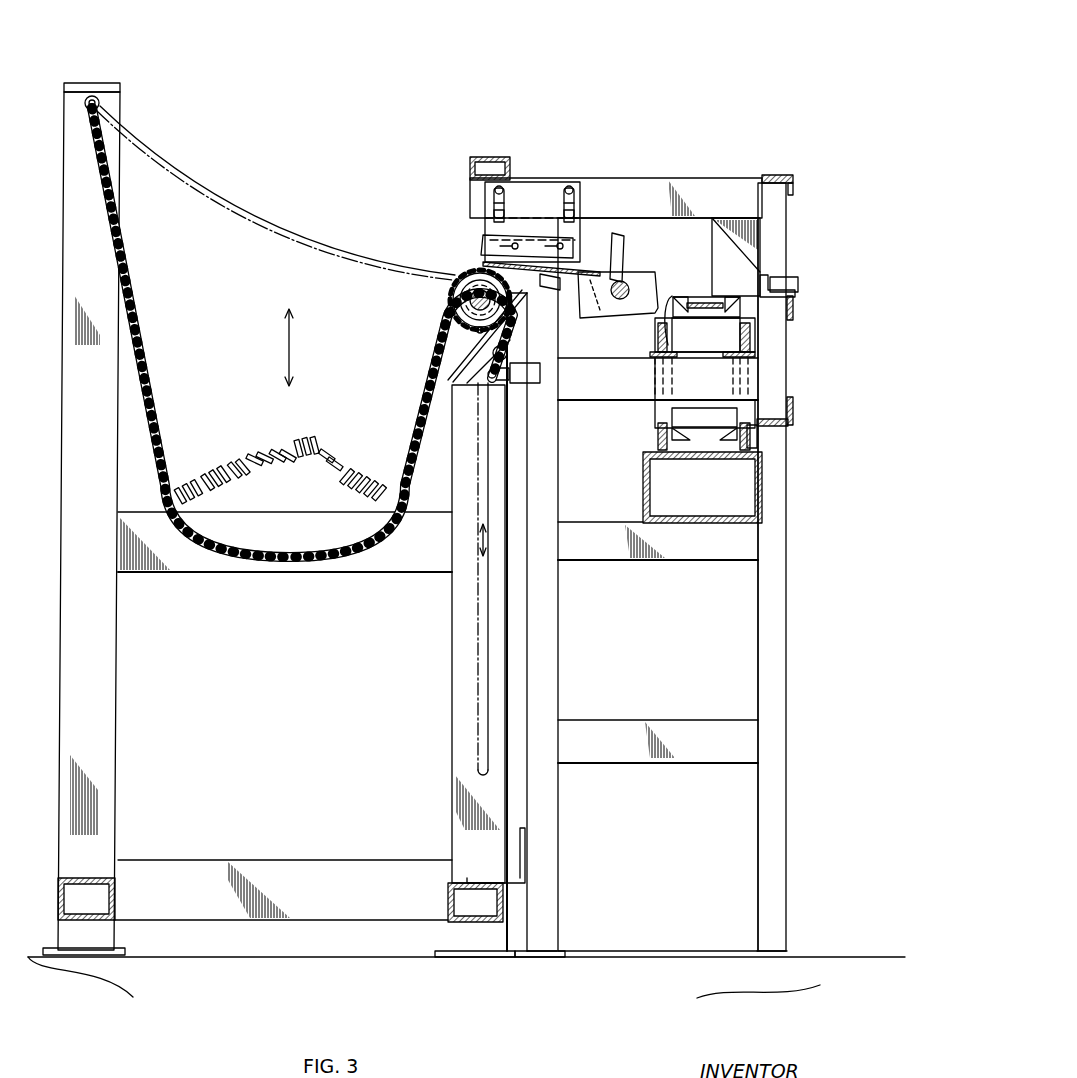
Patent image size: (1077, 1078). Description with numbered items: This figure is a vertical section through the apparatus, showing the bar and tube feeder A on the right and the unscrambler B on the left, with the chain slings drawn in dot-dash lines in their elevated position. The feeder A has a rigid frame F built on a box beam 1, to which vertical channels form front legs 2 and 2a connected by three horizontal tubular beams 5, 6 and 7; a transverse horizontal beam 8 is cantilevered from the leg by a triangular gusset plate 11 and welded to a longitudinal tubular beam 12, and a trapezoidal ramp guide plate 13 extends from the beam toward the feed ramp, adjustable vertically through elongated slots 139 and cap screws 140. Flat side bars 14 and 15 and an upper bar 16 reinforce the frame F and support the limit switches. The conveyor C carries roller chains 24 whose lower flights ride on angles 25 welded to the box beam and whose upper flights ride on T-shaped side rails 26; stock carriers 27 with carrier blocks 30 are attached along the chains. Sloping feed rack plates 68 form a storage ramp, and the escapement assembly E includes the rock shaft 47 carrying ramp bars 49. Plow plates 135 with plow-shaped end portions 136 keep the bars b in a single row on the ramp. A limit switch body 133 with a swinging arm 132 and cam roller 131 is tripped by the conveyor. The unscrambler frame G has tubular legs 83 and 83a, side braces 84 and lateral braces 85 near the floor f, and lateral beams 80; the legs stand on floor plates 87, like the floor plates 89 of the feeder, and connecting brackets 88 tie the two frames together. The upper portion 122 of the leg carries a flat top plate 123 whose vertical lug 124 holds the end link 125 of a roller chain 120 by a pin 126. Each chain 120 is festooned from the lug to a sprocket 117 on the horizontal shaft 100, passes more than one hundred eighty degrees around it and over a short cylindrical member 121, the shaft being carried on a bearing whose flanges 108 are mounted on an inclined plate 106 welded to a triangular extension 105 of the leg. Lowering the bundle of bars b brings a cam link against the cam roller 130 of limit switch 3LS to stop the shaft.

The box beam 1 is at (764, 482).
The front leg 2 is at (777, 680).
The front leg 2a is at (552, 672).
The horizontal tubular beam 5 is at (623, 752).
The horizontal tubular beam 6 is at (628, 555).
The horizontal tubular beam 7 is at (585, 395).
The transverse horizontal beam 8 is at (668, 197).
The triangular gusset plate 11 is at (755, 238).
The longitudinal horizontal tubular beam 12 is at (490, 156).
The ramp guide plate 13 is at (552, 185).
The flat side bar 14 is at (794, 312).
The flat side bar 15 is at (794, 406).
The upper bar 16 is at (790, 180).
The roller chain 24 is at (655, 415).
The angle 25 is at (760, 450).
The side rail 26 is at (745, 342).
The stock carrier 27 is at (670, 300).
The carrier block 30 is at (698, 330).
The rock shaft 47 is at (628, 285).
The ramp bar 49 is at (607, 240).
The feed rack plate 68 is at (652, 398).
The lateral beam 80 is at (402, 561).
The front leg 83 is at (462, 690).
The front leg 83a is at (106, 676).
The side brace 84 is at (88, 875).
The lateral tubular brace 85 is at (228, 860).
The floor plate 87 is at (98, 953).
The connecting bracket 88 is at (478, 878).
The floor plate 89 is at (543, 950).
The horizontal shaft 100 is at (465, 290).
The triangular extension 105 is at (520, 332).
The inclined flat rectangular plate 106 is at (470, 370).
The flange 108 is at (438, 330).
The sprocket 117 is at (478, 333).
The roller chain 120 is at (133, 288).
The short cylindrical member 121 is at (492, 352).
The upper portion 122 is at (72, 112).
The flat top plate 123 is at (120, 88).
The vertical lug 124 is at (95, 96).
The end link 125 is at (100, 106).
The pin 126 is at (88, 110).
The cam roller 130 is at (488, 380).
The cam roller 131 is at (752, 300).
The swinging arm 132 is at (755, 292).
The limit switch body 133 is at (782, 278).
The plow plate 135 is at (500, 216).
The plow-shaped end portion 136 is at (490, 247).
The vertically elongated slot 139 is at (494, 200).
The cap screw 140 is at (508, 238).
The limit switch 3LS is at (541, 373).
The bar and tube feeder A is at (733, 153).
The unscrambler B is at (72, 60).
The conveyor C is at (690, 282).
The escapement assembly E is at (662, 230).
The rigid frame F is at (788, 752).
The rigid frame G is at (60, 615).
The bar b is at (268, 432).
The floor f is at (628, 957).